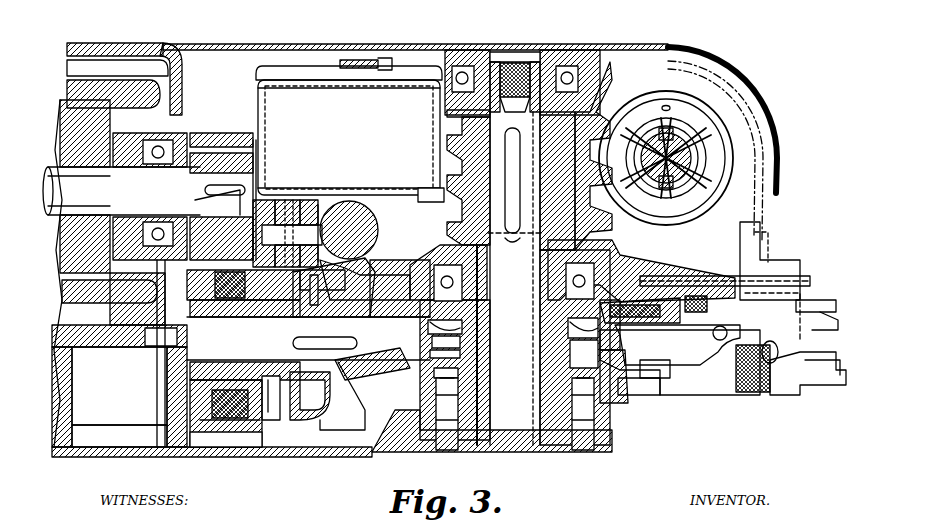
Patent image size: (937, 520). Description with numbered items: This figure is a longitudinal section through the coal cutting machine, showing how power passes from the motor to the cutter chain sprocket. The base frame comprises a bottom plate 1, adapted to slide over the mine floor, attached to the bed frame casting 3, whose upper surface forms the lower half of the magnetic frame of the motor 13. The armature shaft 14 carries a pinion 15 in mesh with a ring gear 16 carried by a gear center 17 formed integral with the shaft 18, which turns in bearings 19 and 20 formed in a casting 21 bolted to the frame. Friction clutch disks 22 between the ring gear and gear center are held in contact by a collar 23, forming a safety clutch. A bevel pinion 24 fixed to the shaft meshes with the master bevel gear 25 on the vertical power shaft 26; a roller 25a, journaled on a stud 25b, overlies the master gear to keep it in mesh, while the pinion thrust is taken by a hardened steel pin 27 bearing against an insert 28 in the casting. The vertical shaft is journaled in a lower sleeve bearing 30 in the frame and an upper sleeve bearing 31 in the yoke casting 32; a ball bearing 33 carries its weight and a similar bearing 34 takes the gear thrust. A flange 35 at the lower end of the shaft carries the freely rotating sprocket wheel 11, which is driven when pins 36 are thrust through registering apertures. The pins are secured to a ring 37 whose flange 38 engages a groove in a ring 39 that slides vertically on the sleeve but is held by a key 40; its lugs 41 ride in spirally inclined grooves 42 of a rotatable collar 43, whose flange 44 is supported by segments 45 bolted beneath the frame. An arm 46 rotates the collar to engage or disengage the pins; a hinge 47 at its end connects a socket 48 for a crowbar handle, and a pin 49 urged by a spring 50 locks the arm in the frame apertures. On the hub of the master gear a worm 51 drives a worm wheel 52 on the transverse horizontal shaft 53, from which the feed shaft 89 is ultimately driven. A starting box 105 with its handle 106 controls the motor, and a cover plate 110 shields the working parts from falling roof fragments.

The bottom plate 1 is at (262, 455).
The bed frame casting 3 is at (98, 340).
The sprocket wheel 11 is at (617, 392).
The motor 13 is at (140, 48).
The armature shaft 14 is at (121, 191).
The pinion 15 is at (243, 148).
The ring gear 16 is at (198, 432).
The gear center 17 is at (200, 388).
The shaft 18 is at (308, 325).
The bearing 19 is at (282, 404).
The bearing 20 is at (383, 405).
The casting 21 is at (320, 412).
The friction clutch disks 22 is at (222, 420).
The collar 23 is at (255, 410).
The bevel pinion 24 is at (338, 378).
The master bevel gear 25 is at (366, 280).
The roller 25a is at (320, 205).
The stud 25b is at (290, 210).
The vertical power shaft 26 is at (487, 183).
The hardened steel pin 27 is at (172, 360).
The insert 28 is at (150, 352).
The sleeve bearing 30 is at (478, 272).
The sleeve bearing 31 is at (562, 55).
The yoke casting 32 is at (288, 200).
The ball bearing 33 is at (440, 265).
The ball bearing 34 is at (462, 62).
The flange 35 is at (425, 437).
The pins 36 is at (446, 395).
The ring 37 is at (455, 378).
The flange 38 is at (455, 358).
The ring 39 is at (450, 345).
The key 40 is at (570, 355).
The lugs 41 is at (640, 392).
The spirally inclined groove 42 is at (445, 328).
The rotatable collar 43 is at (665, 380).
The flange 44 is at (612, 300).
The segments 45 is at (660, 320).
The arm 46 is at (698, 350).
The hinge 47 is at (770, 300).
The socket 48 is at (782, 383).
The pin 49 is at (796, 303).
The spring 50 is at (750, 390).
The worm 51 is at (448, 150).
The worm wheel 52 is at (640, 60).
The transverse horizontal shaft 53 is at (688, 138).
The feed shaft 89 is at (372, 220).
The starting box 105 is at (350, 134).
The handle 106 is at (366, 58).
The cover plate 110 is at (318, 46).